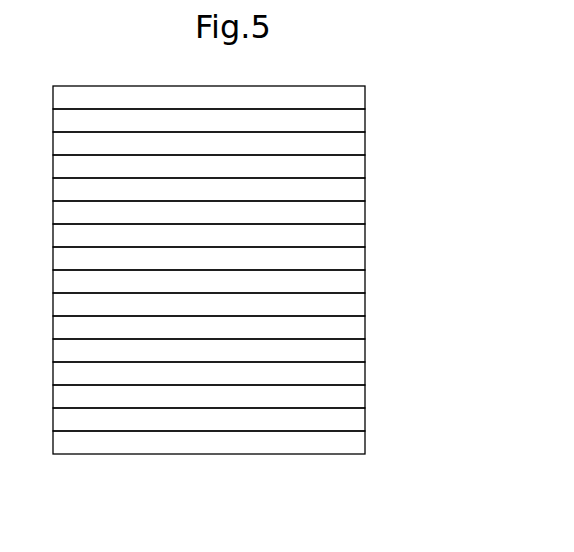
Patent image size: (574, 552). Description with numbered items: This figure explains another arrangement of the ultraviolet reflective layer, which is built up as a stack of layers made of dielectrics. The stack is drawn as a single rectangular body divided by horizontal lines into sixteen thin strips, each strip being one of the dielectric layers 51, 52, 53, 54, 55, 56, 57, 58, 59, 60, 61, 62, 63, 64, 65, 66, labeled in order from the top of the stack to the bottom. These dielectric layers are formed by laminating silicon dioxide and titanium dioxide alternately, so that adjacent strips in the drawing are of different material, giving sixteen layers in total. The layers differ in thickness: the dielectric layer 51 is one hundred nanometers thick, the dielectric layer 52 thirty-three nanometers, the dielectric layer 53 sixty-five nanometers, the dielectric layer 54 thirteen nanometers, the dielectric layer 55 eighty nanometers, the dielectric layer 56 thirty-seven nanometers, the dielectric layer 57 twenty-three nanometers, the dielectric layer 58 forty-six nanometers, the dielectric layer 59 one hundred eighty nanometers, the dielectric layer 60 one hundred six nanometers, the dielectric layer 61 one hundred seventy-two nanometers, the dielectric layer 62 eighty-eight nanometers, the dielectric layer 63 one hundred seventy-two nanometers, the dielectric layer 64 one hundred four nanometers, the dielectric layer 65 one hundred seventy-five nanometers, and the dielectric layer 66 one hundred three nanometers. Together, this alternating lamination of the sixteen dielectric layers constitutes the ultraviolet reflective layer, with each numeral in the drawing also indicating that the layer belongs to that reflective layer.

The dielectric layer 51 is at (365, 98).
The dielectric layer 52 is at (365, 120).
The dielectric layer 53 is at (365, 144).
The dielectric layer 54 is at (365, 166).
The dielectric layer 55 is at (365, 190).
The dielectric layer 56 is at (365, 212).
The dielectric layer 57 is at (365, 236).
The dielectric layer 58 is at (365, 258).
The dielectric layer 59 is at (365, 282).
The dielectric layer 60 is at (365, 304).
The dielectric layer 61 is at (365, 328).
The dielectric layer 62 is at (365, 350).
The dielectric layer 63 is at (365, 374).
The dielectric layer 64 is at (365, 396).
The dielectric layer 65 is at (365, 420).
The dielectric layer 66 is at (365, 442).